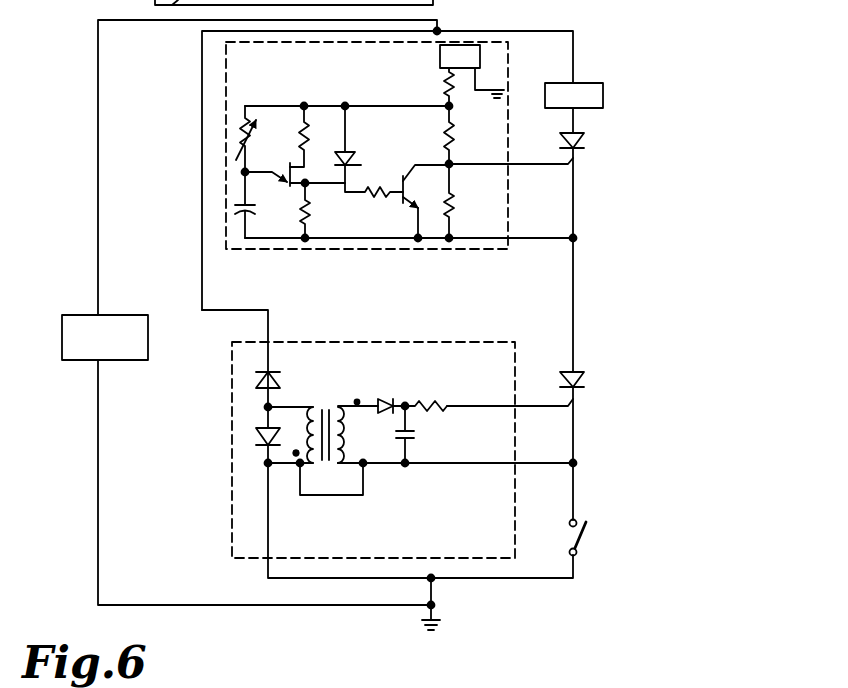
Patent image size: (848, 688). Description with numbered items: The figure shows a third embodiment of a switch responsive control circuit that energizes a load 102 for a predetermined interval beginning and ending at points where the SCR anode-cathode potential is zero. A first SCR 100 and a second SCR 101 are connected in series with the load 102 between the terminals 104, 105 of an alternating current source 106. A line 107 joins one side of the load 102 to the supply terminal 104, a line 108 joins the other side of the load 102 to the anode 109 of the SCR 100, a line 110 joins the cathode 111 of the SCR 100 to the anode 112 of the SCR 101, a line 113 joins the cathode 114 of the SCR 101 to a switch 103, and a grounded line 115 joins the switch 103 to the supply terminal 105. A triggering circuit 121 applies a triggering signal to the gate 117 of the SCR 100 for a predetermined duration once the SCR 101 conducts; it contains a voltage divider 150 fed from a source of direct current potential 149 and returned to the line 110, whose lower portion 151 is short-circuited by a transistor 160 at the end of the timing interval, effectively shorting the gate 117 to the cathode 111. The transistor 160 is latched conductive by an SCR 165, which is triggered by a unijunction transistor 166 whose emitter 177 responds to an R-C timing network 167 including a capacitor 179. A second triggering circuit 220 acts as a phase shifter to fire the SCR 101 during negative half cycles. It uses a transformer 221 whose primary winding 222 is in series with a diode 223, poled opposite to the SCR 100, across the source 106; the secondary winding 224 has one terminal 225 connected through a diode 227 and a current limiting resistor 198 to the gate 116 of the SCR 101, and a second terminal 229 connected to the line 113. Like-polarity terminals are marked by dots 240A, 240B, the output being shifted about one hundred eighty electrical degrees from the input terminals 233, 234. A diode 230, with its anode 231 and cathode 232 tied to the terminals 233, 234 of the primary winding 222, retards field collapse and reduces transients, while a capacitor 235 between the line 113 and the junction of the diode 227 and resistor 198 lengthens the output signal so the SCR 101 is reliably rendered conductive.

The first SCR 100 is at (606, 139).
The second SCR 101 is at (600, 382).
The load 102 is at (604, 90).
The switch 103 is at (590, 545).
The supply terminal 104 is at (107, 311).
The supply terminal 105 is at (97, 367).
The alternating current source 106 is at (62, 344).
The line 107 is at (478, 30).
The line 108 is at (572, 120).
The anode 109 is at (560, 140).
The line 110 is at (575, 204).
The cathode 111 is at (580, 150).
The anode 112 is at (577, 380).
The line 113 is at (580, 470).
The cathode 114 is at (583, 390).
The grounded line 115 is at (468, 582).
The gate 116 is at (572, 407).
The gate 117 is at (568, 171).
The triggering circuit 121 is at (223, 135).
The source of direct current potential 149 is at (440, 62).
The voltage divider 150 is at (452, 244).
The lower divider portion 151 is at (458, 203).
The transistor 160 is at (405, 170).
The SCR 165 is at (353, 152).
The unijunction transistor 166 is at (290, 195).
The R-C timing network 167 is at (246, 102).
The emitter 177 is at (267, 165).
The capacitor 179 is at (243, 222).
The current limiting resistor 198 is at (448, 402).
The triggering circuit 220 is at (452, 340).
The transformer 221 is at (325, 404).
The primary winding 222 is at (320, 407).
The diode 223 is at (278, 370).
The secondary winding 224 is at (372, 435).
The terminal 225 is at (348, 406).
The diode 227 is at (398, 398).
The second terminal 229 is at (331, 479).
The diode 230 is at (250, 445).
The anode 231 is at (262, 430).
The cathode 232 is at (263, 455).
The terminal 233 is at (294, 433).
The terminal 234 is at (300, 468).
The capacitor 235 is at (420, 438).
The dot 240A is at (294, 457).
The dot 240B is at (360, 402).